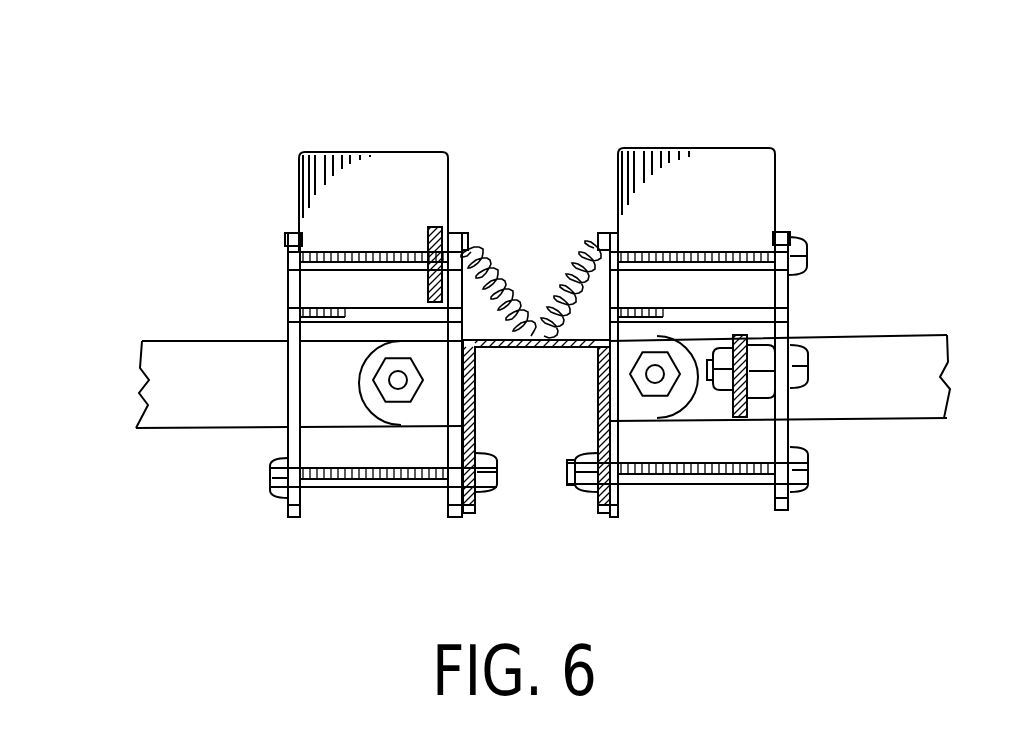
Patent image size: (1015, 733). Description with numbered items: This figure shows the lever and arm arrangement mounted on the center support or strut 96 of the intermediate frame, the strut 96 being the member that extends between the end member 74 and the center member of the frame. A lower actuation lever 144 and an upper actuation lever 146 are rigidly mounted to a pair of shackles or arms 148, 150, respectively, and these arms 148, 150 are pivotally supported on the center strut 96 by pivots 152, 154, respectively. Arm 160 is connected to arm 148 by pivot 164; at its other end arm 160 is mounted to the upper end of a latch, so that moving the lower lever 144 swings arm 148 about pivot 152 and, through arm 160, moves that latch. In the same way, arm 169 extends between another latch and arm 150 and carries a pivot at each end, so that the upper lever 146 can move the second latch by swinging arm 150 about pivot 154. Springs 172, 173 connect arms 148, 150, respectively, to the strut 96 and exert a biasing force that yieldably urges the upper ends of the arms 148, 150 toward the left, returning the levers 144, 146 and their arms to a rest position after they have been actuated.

The end member 74 is at (175, 427).
The center support or strut 96 is at (478, 382).
The lower actuation lever 144 is at (695, 148).
The upper actuation lever 146 is at (343, 152).
The shackle or arm 148 is at (790, 293).
The shackle or arm 150 is at (287, 290).
The pivot 152 is at (805, 470).
The pivot 154 is at (270, 478).
The arm 160 is at (738, 420).
The pivot 164 is at (808, 370).
The arm 169 is at (430, 227).
The spring 172 is at (552, 290).
The spring 173 is at (522, 320).